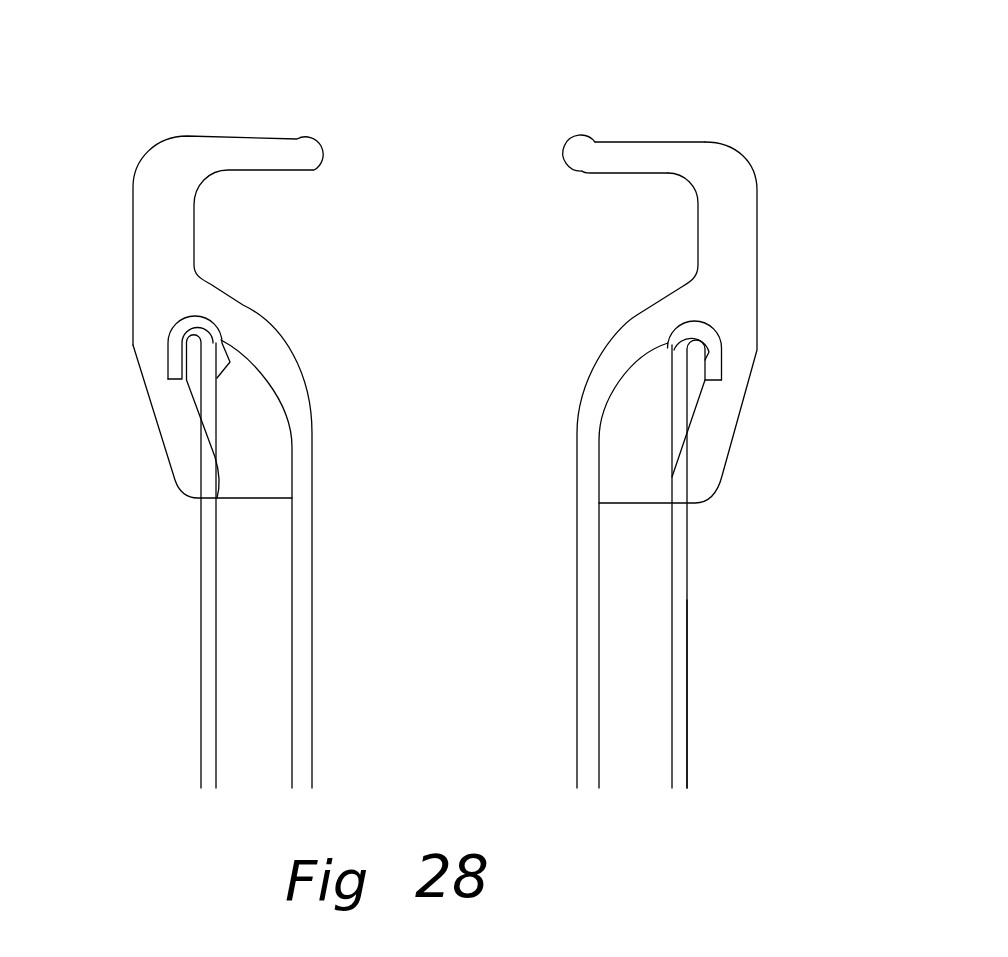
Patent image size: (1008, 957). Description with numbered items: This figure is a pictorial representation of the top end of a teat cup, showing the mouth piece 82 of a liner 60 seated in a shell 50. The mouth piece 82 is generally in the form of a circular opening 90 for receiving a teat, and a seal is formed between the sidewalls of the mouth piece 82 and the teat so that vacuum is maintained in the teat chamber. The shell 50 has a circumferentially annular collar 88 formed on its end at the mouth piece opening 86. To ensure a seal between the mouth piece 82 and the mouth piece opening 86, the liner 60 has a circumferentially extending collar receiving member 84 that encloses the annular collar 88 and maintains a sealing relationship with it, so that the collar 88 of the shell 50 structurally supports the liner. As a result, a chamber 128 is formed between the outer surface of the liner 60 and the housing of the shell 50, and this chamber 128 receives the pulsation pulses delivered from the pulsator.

The shell 50 is at (688, 577).
The liner 60 is at (597, 658).
The mouth piece 82 is at (733, 148).
The collar receiving member 84 is at (645, 413).
The mouth piece opening 86 is at (222, 358).
The circumferentially annular collar 88 is at (722, 340).
The circular opening 90 is at (563, 153).
The chamber 128 is at (247, 616).